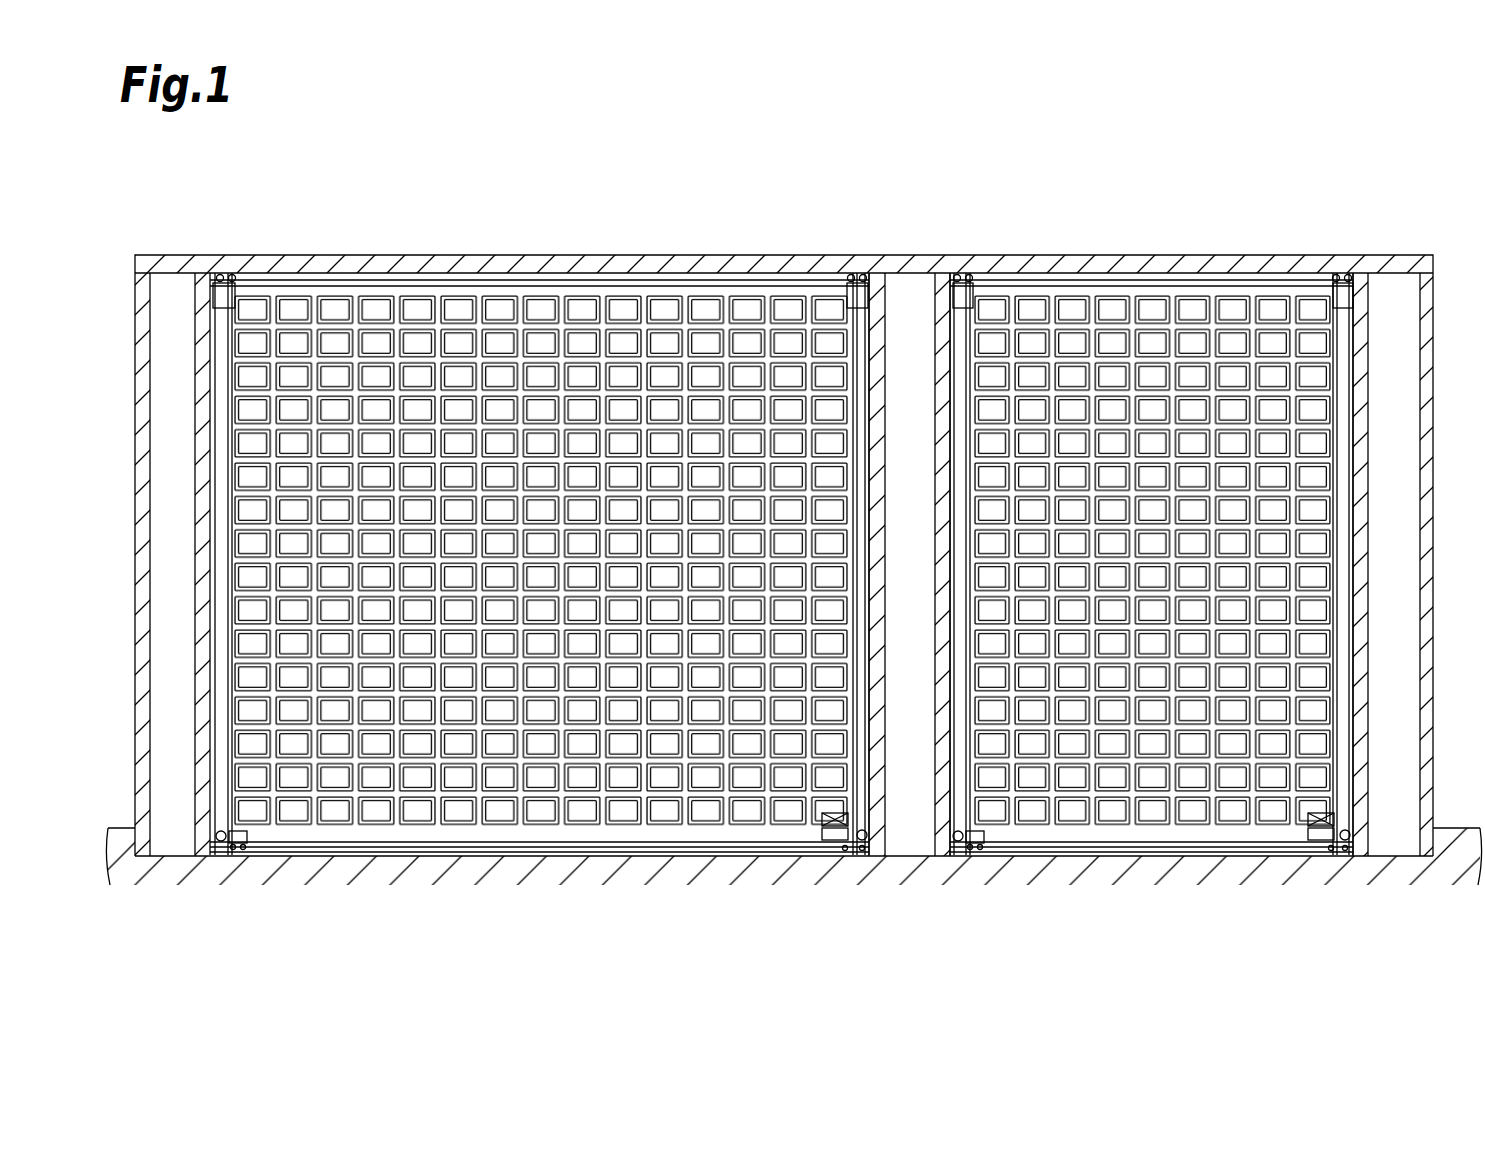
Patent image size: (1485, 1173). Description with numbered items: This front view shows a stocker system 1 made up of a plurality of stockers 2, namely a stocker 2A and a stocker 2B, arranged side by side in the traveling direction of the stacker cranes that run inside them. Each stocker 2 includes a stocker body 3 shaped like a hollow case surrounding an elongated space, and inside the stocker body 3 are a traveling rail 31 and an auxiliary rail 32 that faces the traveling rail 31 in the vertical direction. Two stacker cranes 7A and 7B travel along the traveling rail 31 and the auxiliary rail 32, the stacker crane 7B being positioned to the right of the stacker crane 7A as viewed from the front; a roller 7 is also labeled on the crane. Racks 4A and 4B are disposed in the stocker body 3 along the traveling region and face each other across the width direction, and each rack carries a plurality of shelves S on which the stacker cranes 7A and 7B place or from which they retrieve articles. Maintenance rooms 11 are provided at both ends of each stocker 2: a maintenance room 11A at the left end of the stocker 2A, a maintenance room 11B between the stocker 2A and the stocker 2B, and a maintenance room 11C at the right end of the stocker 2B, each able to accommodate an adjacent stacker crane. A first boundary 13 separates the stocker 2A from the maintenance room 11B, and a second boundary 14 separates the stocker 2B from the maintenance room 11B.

The stocker system 1 is at (793, 550).
The maintenance rooms 11 is at (798, 508).
The maintenance room 11A is at (170, 250).
The maintenance room 11B is at (906, 250).
The maintenance room 11C is at (1385, 250).
The stocker 2 is at (785, 560).
The stocker 2A is at (785, 560).
The stocker 2B is at (1138, 250).
The stocker body 3 is at (358, 264).
The auxiliary rail 32 is at (782, 508).
The shelves S is at (545, 355).
The rack 4A is at (781, 522).
The rack 4B is at (719, 290).
The traveling rail 31 is at (428, 852).
The roller 7 is at (788, 887).
The stacker crane 7A is at (236, 868).
The stacker crane 7B is at (853, 872).
The first boundary 13 is at (891, 636).
The second boundary 14 is at (932, 575).